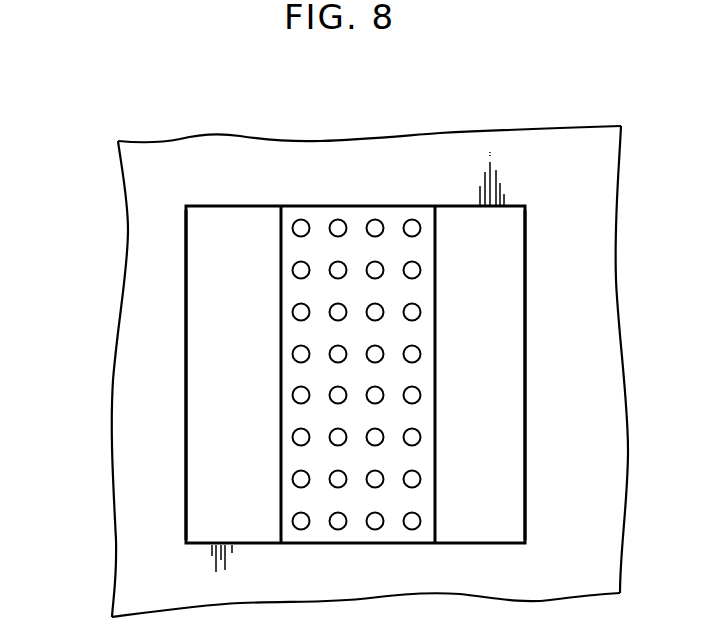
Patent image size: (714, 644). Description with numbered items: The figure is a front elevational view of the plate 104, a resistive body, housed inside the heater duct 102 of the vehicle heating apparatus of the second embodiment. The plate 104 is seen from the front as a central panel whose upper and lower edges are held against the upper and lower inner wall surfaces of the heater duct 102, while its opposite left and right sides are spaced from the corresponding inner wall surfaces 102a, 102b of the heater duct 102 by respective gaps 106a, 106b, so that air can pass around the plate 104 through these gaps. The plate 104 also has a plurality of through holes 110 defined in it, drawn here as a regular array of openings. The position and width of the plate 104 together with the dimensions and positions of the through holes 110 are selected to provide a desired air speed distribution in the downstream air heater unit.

The heater duct 102 is at (537, 127).
The inner wall surface 102a is at (526, 412).
The inner wall surface 102b is at (186, 392).
The plate 104 is at (396, 397).
The gap 106a is at (485, 362).
The gap 106b is at (198, 285).
The through holes 110 is at (376, 522).